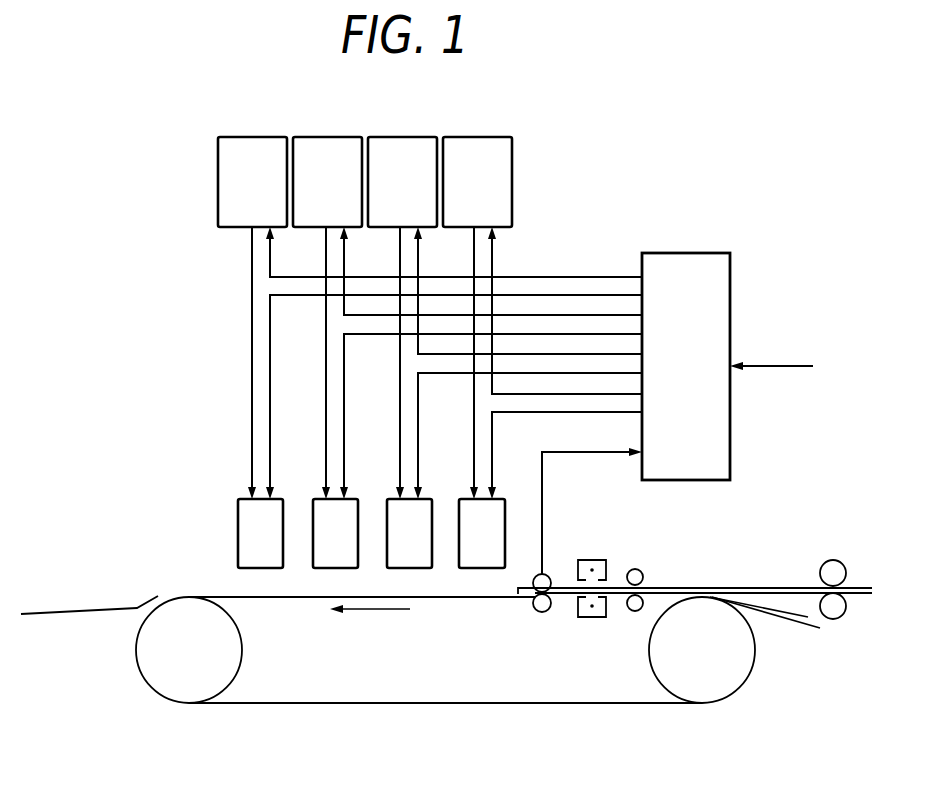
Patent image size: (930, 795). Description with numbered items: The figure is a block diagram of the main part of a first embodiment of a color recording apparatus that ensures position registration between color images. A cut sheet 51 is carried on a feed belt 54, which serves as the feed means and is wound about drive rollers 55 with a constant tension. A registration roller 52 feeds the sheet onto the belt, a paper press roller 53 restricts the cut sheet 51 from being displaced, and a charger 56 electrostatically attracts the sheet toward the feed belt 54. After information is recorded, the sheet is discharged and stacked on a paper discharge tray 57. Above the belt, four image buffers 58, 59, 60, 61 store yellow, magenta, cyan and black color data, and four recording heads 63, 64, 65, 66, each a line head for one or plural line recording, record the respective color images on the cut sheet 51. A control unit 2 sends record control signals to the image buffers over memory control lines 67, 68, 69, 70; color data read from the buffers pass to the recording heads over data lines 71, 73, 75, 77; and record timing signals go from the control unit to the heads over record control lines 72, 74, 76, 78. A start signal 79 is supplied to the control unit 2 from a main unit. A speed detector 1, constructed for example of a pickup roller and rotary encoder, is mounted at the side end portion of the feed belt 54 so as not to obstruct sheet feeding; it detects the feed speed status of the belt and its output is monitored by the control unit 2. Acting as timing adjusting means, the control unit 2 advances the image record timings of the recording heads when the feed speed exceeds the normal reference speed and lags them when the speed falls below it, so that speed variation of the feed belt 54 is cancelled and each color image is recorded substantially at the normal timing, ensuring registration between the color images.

The speed detector 1 is at (566, 550).
The control unit 2 is at (686, 342).
The cut sheet 51 is at (695, 567).
The registration roller 52 is at (854, 572).
The paper press roller 53 is at (661, 575).
The feed belt 54 is at (472, 681).
The drive rollers 55 is at (172, 669).
The charger 56 is at (578, 610).
The paper discharge tray 57 is at (89, 580).
The image buffer 58 is at (252, 157).
The image buffer 59 is at (327, 157).
The image buffer 60 is at (404, 157).
The image buffer 61 is at (480, 156).
The recording head 63 is at (275, 509).
The recording head 64 is at (350, 509).
The recording head 65 is at (424, 510).
The recording head 66 is at (497, 510).
The memory control line 67 is at (454, 250).
The memory control line 68 is at (491, 266).
The memory control line 69 is at (528, 289).
The memory control line 70 is at (558, 394).
The data line 71 is at (220, 363).
The record control line 72 is at (416, 397).
The data line 73 is at (303, 363).
The record control line 74 is at (458, 416).
The data line 75 is at (377, 363).
The record control line 76 is at (496, 436).
The data line 77 is at (452, 363).
The record control line 78 is at (534, 455).
The start signal 79 is at (771, 341).